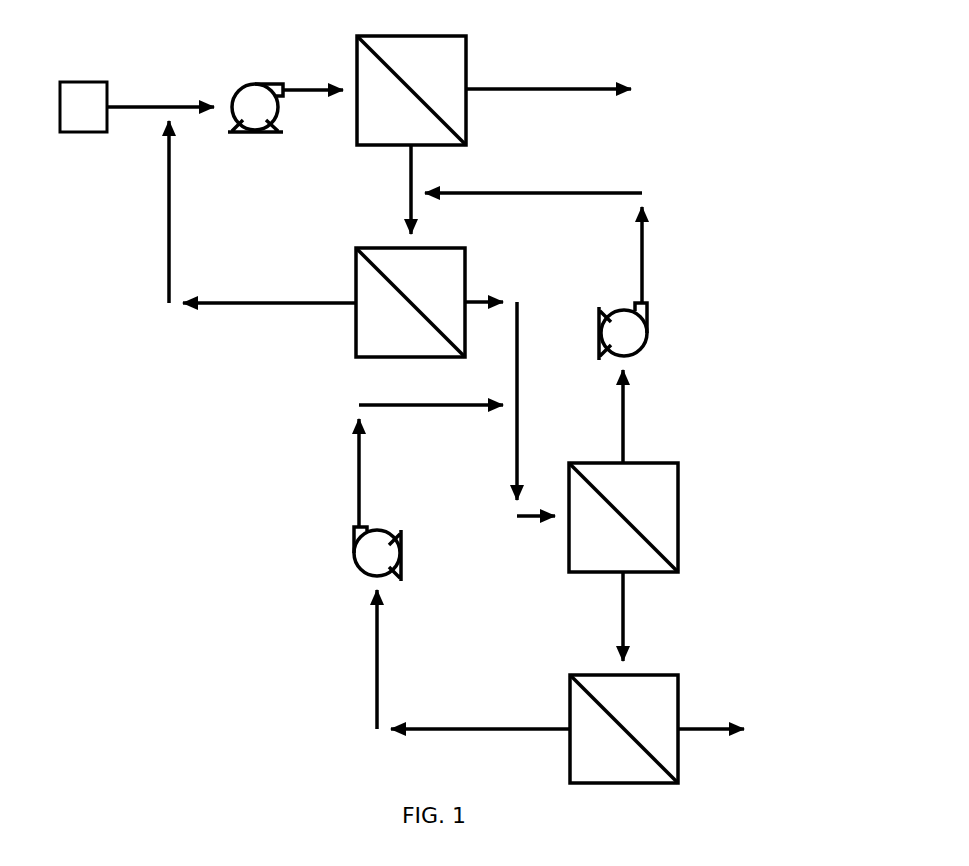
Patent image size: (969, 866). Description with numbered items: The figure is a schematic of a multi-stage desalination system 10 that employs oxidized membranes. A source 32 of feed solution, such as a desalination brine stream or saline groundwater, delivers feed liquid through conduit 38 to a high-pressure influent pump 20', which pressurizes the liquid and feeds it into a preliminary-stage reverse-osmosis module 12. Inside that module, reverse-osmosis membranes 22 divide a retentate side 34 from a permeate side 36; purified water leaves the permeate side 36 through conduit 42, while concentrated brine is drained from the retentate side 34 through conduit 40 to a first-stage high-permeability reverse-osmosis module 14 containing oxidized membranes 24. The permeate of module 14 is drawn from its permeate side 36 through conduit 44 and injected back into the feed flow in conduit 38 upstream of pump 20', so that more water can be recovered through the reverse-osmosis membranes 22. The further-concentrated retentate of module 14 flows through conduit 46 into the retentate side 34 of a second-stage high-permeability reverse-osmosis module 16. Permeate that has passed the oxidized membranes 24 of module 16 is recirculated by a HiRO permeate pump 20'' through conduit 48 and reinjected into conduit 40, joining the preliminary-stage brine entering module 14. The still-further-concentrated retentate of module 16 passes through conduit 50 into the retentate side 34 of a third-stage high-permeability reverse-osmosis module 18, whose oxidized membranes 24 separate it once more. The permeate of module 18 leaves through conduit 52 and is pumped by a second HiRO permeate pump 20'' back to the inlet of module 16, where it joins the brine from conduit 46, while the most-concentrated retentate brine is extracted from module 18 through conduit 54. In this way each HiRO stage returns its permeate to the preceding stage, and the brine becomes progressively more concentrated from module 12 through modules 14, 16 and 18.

The system 10 is at (165, 467).
The preliminary-stage reverse-osmosis module 12 is at (325, 45).
The first-stage high-permeability reverse-osmosis module 14 is at (324, 256).
The second-stage high-permeability reverse-osmosis module 16 is at (704, 458).
The third-stage high-permeability reverse-osmosis module 18 is at (702, 682).
The influent pump 20' is at (285, 86).
The HiRO permeate pump 20'' is at (500, 425).
The reverse-osmosis membrane 22 is at (441, 119).
The oxidized membrane 24 is at (376, 266).
The source of feed solution 32 is at (68, 121).
The retentate side 34 is at (372, 130).
The permeate side 36 is at (413, 76).
The conduit 38 is at (134, 105).
The conduit 40 is at (406, 176).
The conduit 42 is at (517, 88).
The conduit 44 is at (238, 300).
The conduit 46 is at (519, 347).
The conduit 48 is at (626, 416).
The conduit 50 is at (625, 622).
The conduit 52 is at (473, 727).
The conduit 54 is at (710, 732).